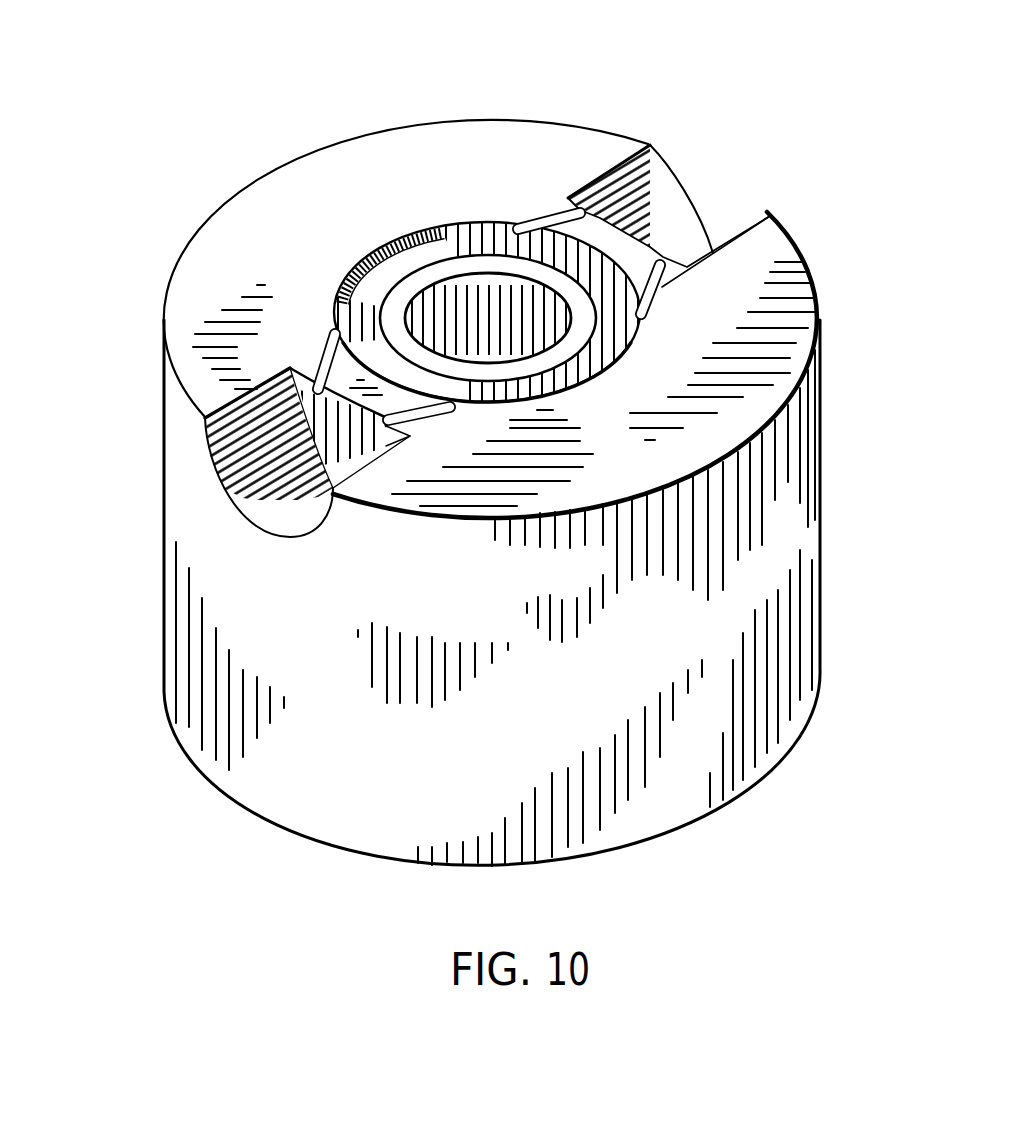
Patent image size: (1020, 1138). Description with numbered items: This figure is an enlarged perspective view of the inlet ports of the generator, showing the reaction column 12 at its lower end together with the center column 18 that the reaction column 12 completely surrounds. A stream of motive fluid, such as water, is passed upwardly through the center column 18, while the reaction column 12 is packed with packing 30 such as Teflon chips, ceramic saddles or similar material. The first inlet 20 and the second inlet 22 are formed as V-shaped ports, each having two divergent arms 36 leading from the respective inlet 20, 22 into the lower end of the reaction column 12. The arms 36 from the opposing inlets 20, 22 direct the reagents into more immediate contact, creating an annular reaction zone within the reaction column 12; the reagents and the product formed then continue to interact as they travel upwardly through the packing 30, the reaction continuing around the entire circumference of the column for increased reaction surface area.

The reaction column 12 is at (819, 437).
The center column 18 is at (457, 265).
The first inlet 20 is at (642, 173).
The second inlet 22 is at (205, 417).
The packing 30 is at (362, 270).
The divergent arms 36 is at (531, 216).